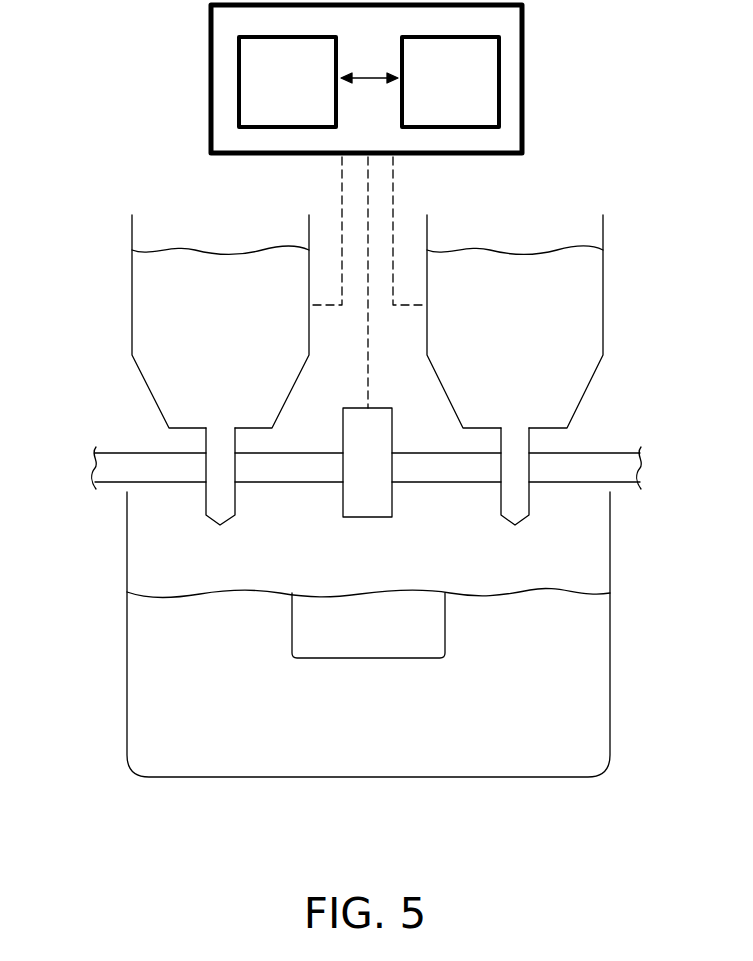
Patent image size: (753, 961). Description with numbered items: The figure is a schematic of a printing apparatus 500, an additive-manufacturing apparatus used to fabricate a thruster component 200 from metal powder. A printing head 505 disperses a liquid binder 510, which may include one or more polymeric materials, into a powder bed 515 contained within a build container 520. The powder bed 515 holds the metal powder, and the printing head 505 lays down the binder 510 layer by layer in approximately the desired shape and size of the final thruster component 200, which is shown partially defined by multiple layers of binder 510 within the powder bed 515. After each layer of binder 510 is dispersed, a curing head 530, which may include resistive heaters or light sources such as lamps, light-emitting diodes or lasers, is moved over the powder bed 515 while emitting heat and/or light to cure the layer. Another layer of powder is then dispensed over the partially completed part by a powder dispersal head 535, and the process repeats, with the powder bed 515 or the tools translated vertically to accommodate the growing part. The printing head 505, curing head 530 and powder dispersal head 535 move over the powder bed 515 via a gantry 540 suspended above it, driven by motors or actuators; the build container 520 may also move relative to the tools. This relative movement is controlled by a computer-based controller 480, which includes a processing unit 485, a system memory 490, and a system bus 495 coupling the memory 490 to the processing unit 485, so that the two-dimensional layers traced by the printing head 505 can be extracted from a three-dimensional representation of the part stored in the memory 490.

The thruster component 200 is at (362, 648).
The computer-based controller 480 is at (525, 85).
The processing unit 485 is at (430, 103).
The system memory 490 is at (267, 91).
The system bus 495 is at (364, 76).
The printing apparatus 500 is at (149, 159).
The printing head 505 is at (220, 527).
The liquid binder 510 is at (200, 343).
The powder bed 515 is at (214, 757).
The build container 520 is at (612, 555).
The curing head 530 is at (375, 519).
The powder dispersal head 535 is at (517, 527).
The gantry 540 is at (599, 448).